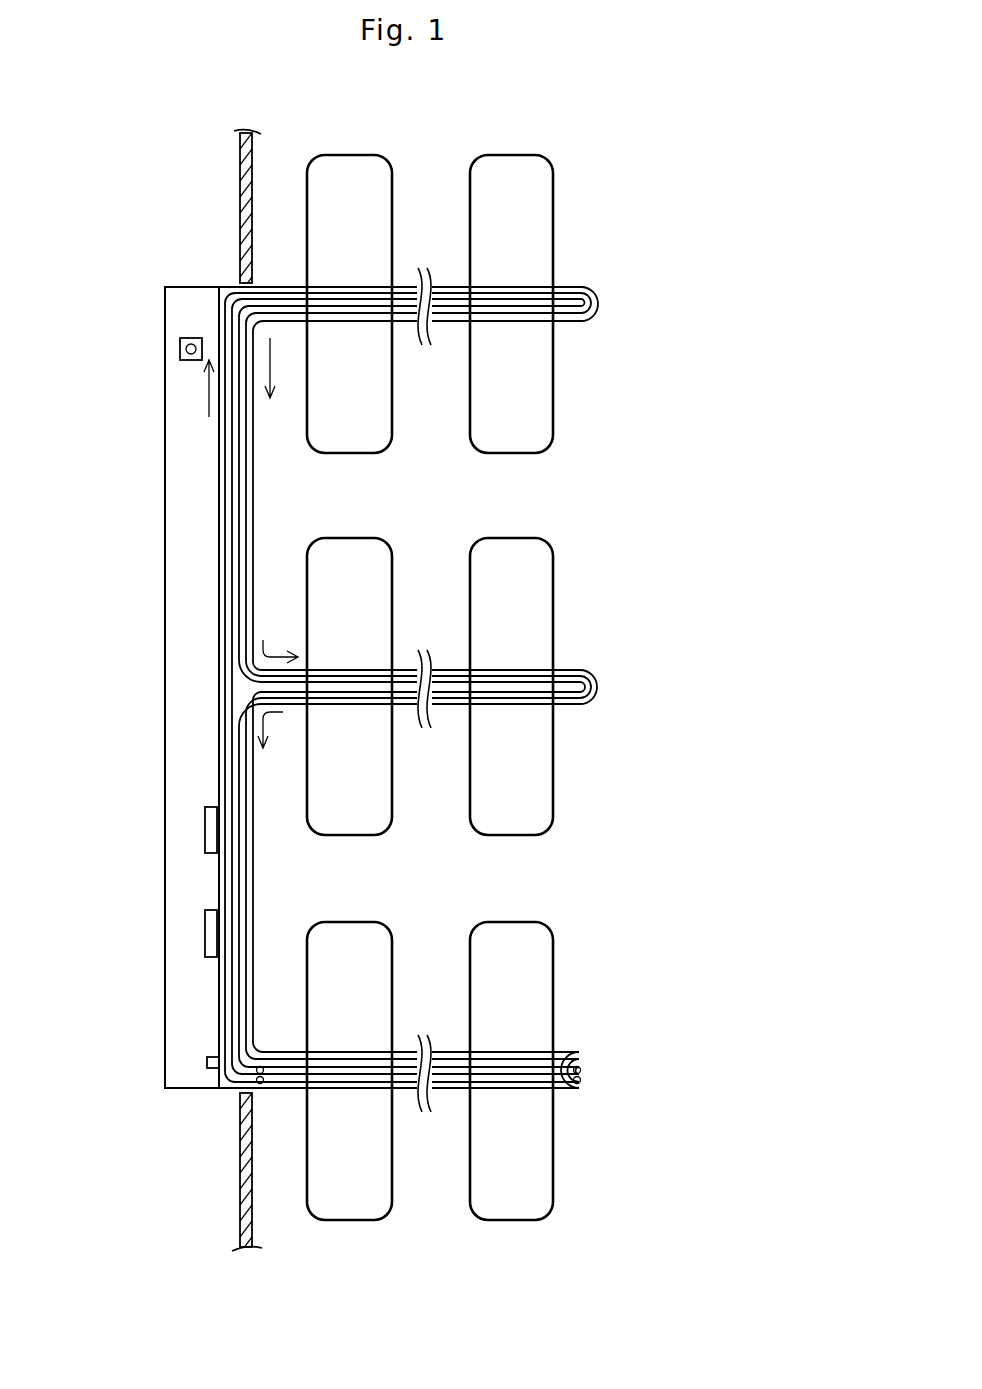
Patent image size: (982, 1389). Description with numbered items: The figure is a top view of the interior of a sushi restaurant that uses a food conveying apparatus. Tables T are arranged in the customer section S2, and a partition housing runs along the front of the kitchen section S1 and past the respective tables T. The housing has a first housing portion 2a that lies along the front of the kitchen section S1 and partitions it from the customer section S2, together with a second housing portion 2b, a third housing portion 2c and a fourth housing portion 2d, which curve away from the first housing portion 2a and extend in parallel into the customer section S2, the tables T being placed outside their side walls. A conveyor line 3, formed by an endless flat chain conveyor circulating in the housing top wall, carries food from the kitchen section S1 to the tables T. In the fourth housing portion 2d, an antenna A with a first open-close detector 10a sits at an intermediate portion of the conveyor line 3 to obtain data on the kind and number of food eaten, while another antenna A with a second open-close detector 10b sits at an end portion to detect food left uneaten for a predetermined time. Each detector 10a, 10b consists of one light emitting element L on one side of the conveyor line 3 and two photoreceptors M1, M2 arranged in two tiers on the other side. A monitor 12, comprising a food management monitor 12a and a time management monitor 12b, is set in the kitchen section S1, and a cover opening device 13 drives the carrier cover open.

The first housing portion 2a is at (218, 650).
The second housing portion 2b is at (598, 318).
The third housing portion 2c is at (466, 691).
The fourth housing portion 2d is at (597, 1062).
The conveyor line 3 is at (586, 690).
The first open-close detector 10a is at (575, 1083).
The second open-close detector 10b is at (166, 1135).
The monitor 12 is at (122, 882).
The food management monitor 12a is at (205, 830).
The time management monitor 12b is at (205, 923).
The cover opening device 13 is at (197, 1067).
The table T is at (351, 166).
The antenna A is at (262, 1088).
The light emitting element L is at (220, 1086).
The photoreceptor M1 is at (166, 1147).
The photoreceptor M2 is at (242, 1092).
The kitchen section S1 is at (113, 444).
The customer section S2 is at (442, 578).